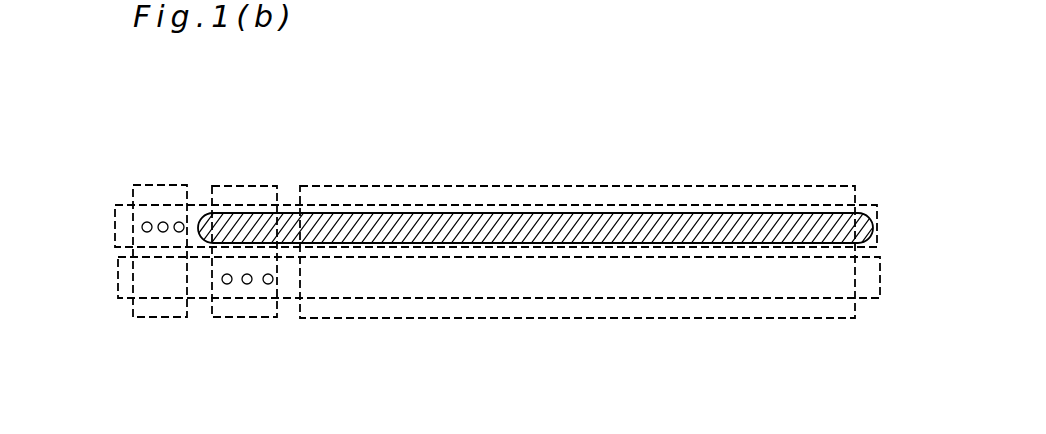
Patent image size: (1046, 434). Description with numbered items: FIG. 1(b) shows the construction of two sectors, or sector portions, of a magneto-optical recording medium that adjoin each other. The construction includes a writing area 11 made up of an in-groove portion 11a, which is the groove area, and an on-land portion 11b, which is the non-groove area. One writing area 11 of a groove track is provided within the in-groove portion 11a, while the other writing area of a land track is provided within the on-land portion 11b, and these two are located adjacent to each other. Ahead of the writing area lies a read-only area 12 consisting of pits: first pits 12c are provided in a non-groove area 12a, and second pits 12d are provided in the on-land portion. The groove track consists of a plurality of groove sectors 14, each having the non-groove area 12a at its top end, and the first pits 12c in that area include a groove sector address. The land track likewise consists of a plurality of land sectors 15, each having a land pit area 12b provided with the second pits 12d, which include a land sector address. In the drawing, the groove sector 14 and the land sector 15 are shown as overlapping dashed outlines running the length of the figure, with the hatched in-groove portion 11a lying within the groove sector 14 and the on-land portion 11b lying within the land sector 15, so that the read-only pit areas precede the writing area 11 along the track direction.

The writing area 11 is at (507, 318).
The in-groove portion 11a is at (682, 229).
The on-land portion 11b is at (683, 277).
The read-only area 12 is at (275, 377).
The non-groove area 12a is at (162, 318).
The land pit area 12b is at (240, 318).
The first pits 12c is at (179, 222).
The second pits 12d is at (231, 283).
The groove sector 14 is at (115, 220).
The land sector 15 is at (118, 279).